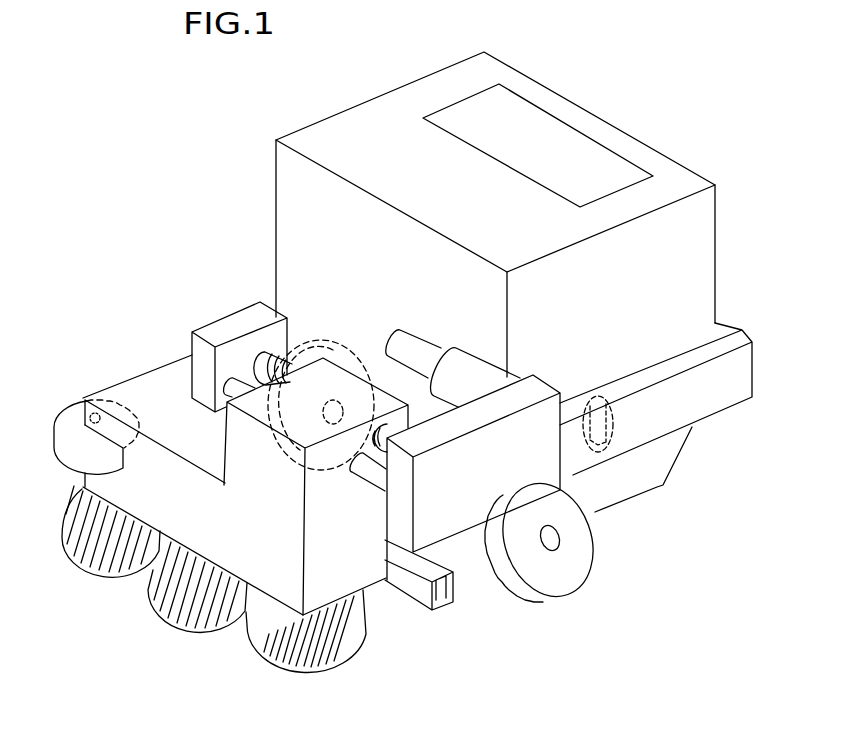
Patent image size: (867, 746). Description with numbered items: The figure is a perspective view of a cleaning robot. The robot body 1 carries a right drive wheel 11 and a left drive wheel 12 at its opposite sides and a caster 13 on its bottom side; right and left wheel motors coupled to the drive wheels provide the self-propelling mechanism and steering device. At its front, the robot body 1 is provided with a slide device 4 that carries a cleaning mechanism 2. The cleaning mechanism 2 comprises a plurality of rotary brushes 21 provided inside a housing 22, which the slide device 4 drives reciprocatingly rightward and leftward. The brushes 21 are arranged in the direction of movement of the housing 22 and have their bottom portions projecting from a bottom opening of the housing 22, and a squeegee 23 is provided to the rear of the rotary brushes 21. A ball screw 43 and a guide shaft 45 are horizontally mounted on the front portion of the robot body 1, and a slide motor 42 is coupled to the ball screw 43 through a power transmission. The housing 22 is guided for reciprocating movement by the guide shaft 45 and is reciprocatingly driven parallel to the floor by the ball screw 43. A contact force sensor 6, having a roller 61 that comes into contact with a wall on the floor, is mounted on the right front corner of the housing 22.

The robot body 1 is at (690, 258).
The cleaning mechanism 2 is at (106, 590).
The rotary brushes 21 is at (67, 558).
The housing 22 is at (172, 372).
The squeegee 23 is at (447, 605).
The slide device 4 is at (356, 330).
The slide motor 42 is at (415, 350).
The ball screw 43 is at (268, 357).
The guide shaft 45 is at (368, 477).
The right drive wheel 11 is at (337, 343).
The left drive wheel 12 is at (575, 545).
The caster 13 is at (617, 438).
The contact force sensor 6 is at (88, 398).
The roller 61 is at (67, 407).